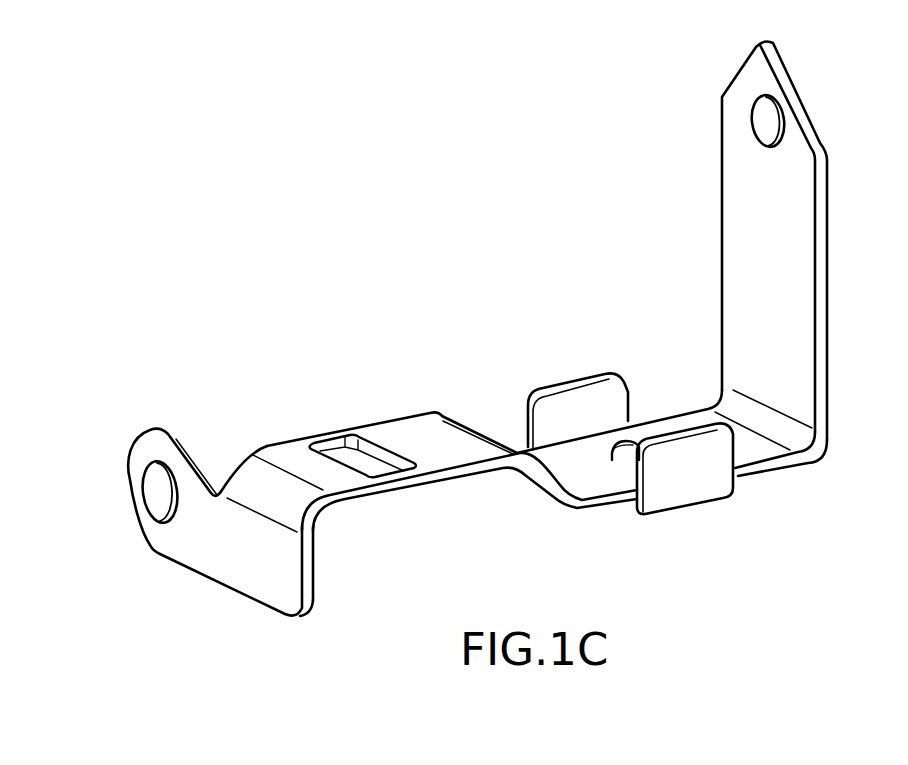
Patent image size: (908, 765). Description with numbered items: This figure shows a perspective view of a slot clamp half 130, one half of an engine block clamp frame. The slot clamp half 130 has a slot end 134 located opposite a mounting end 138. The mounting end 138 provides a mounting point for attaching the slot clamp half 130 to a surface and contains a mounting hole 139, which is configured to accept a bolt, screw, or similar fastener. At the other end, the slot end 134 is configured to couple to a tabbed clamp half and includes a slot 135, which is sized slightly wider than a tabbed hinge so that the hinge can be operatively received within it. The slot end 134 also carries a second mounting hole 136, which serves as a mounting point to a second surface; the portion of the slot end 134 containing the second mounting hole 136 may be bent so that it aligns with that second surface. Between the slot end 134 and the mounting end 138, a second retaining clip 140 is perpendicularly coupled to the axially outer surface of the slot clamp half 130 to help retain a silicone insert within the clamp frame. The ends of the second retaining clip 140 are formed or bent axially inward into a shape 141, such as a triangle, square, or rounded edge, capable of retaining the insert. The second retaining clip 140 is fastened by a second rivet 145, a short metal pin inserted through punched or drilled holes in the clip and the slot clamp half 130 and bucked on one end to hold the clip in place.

The slot clamp half 130 is at (183, 310).
The slot end 134 is at (238, 560).
The slot 135 is at (375, 465).
The second mounting hole 136 is at (158, 486).
The mounting end 138 is at (733, 108).
The mounting hole 139 is at (770, 113).
The second retaining clip 140 is at (677, 483).
The shape 141 is at (615, 364).
The second rivet 145 is at (632, 450).